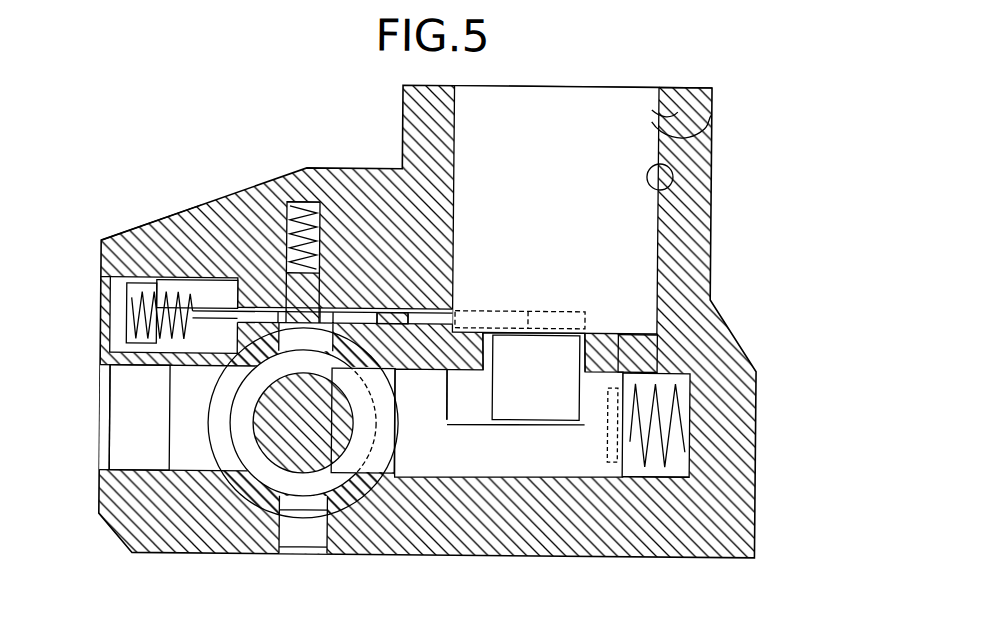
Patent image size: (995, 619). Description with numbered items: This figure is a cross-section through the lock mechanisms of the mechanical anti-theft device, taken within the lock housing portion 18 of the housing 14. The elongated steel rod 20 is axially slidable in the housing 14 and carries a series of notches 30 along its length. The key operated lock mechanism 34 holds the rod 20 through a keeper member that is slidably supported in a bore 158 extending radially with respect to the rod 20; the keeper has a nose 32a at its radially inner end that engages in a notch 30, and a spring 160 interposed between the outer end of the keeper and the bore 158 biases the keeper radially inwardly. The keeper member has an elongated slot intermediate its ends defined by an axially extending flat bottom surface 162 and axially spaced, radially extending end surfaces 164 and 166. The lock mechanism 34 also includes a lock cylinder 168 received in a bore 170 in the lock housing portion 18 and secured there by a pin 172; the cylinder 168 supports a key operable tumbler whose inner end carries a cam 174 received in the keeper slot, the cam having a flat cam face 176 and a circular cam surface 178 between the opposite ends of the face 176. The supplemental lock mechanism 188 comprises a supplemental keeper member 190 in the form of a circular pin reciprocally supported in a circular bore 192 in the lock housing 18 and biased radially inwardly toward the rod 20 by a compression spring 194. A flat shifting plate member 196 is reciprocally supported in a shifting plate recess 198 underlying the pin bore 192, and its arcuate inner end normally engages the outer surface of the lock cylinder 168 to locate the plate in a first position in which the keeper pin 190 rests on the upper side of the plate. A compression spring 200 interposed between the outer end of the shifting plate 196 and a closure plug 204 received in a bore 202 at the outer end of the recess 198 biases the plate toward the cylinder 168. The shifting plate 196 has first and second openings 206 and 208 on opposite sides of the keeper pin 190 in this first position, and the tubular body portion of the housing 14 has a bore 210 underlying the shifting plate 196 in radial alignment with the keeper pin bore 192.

The housing 14 is at (238, 495).
The lock housing portion 18 is at (255, 554).
The rod 20 is at (215, 434).
The notch 30 is at (244, 450).
The nose 32a is at (382, 474).
The key operated lock mechanism 34 is at (666, 58).
The bore 158 is at (662, 476).
The spring 160 is at (676, 408).
The flat bottom surface 162 is at (482, 417).
The end surface 164 is at (451, 404).
The end surface 166 is at (584, 399).
The lock cylinder 168 is at (638, 148).
The bore 170 is at (696, 86).
The pin 172 is at (670, 168).
The cam 174 is at (560, 356).
The flat cam face 176 is at (586, 370).
The circular cam surface 178 is at (522, 389).
The supplemental lock mechanism 188 is at (98, 225).
The supplemental keeper member 190 is at (286, 254).
The circular bore 192 is at (322, 301).
The compression spring 194 is at (292, 202).
The shifting plate member 196 is at (170, 368).
The shifting plate recess 198 is at (424, 305).
The compression spring 200 is at (130, 320).
The bore 202 is at (126, 256).
The closure plug 204 is at (102, 296).
The first opening 206 is at (198, 358).
The second opening 208 is at (372, 318).
The bore 210 is at (320, 321).